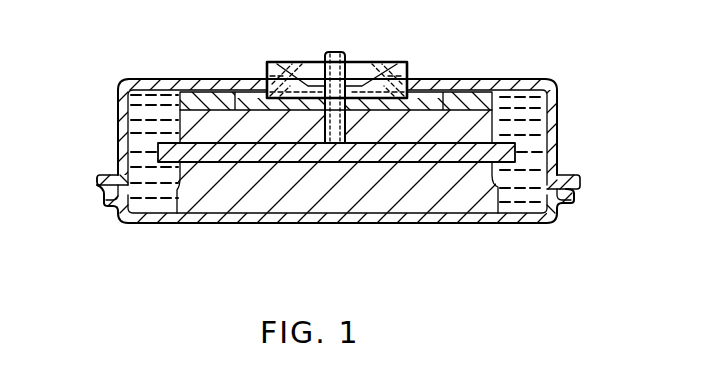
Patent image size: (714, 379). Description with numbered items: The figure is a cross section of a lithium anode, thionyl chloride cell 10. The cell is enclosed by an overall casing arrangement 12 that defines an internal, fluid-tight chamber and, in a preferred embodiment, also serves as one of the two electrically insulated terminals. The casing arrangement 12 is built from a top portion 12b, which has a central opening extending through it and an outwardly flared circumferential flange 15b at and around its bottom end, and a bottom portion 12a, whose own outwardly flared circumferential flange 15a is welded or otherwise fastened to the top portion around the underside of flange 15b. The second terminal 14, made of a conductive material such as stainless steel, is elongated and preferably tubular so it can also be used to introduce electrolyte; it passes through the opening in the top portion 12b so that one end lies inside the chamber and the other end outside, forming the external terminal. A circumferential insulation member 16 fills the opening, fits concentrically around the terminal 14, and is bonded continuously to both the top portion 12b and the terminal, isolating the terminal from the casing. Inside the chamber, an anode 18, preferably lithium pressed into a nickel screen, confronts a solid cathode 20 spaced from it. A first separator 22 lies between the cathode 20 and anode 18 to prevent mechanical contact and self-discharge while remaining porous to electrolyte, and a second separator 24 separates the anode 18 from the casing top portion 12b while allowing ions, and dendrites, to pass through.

The cell 10 is at (117, 73).
The casing arrangement 12 is at (341, 134).
The bottom portion 12a is at (560, 221).
The top portion 12b is at (557, 125).
The terminal 14 is at (354, 77).
The circumferential flange 15a is at (106, 194).
The circumferential flange 15b is at (100, 176).
The insulation member 16 is at (289, 76).
The anode 18 is at (425, 120).
The solid cathode 20 is at (404, 187).
The first separator 22 is at (258, 150).
The second separator 24 is at (200, 96).